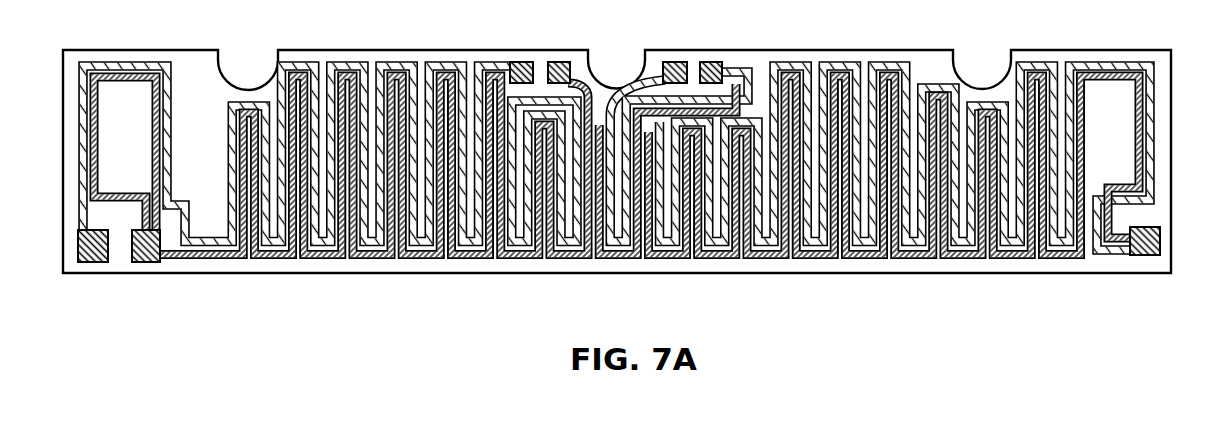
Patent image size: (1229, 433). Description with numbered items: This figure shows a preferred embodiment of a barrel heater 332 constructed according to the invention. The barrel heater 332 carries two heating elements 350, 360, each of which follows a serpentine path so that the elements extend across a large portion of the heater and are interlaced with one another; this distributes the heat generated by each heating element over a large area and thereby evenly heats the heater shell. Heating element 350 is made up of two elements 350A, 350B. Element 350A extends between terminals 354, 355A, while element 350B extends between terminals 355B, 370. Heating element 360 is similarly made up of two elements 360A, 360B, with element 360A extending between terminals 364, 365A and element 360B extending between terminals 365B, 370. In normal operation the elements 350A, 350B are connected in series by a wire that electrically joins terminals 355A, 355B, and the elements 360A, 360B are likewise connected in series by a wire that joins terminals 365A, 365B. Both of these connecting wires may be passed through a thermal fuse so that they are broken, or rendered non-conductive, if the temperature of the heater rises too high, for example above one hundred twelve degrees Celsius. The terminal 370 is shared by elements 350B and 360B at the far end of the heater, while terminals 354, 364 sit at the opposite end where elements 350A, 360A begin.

The barrel heater 332 is at (372, 316).
The heating element 350 is at (865, 268).
The element 350A is at (473, 268).
The element 350B is at (721, 268).
The terminal 354 is at (147, 276).
The terminal 355A is at (559, 60).
The terminal 355B is at (675, 60).
The heating element 360 is at (837, 62).
The element 360A is at (344, 60).
The element 360B is at (1079, 64).
The terminal 364 is at (93, 276).
The terminal 365A is at (517, 60).
The terminal 365B is at (711, 60).
The terminal 370 is at (1162, 243).